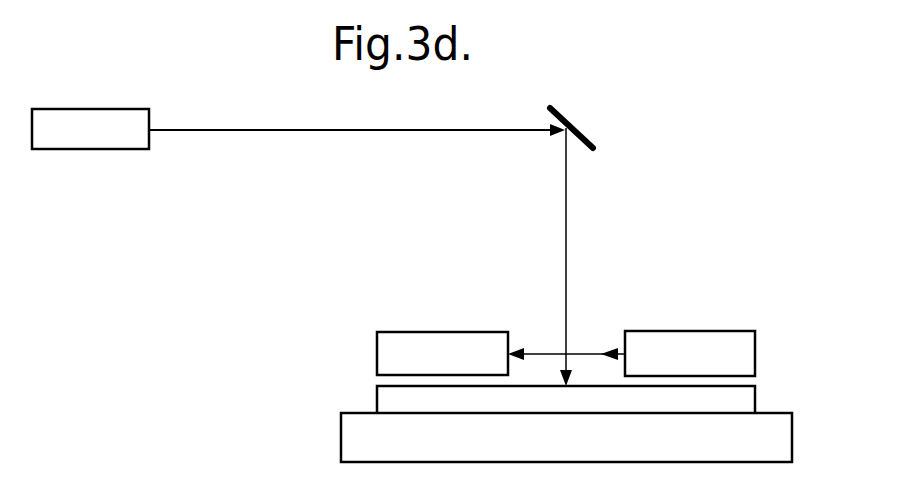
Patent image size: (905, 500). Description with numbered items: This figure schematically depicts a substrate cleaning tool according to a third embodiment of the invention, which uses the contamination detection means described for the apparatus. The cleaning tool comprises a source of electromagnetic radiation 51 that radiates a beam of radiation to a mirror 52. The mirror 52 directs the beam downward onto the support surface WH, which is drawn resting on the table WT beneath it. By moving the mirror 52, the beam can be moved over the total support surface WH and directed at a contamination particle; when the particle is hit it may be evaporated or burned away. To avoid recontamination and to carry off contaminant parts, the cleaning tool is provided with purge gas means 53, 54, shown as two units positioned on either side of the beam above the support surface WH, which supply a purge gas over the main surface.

The source of electromagnetic radiation 51 is at (90, 114).
The mirror 52 is at (612, 104).
The purge gas means 53 is at (710, 338).
The purge gas means 54 is at (400, 338).
The support surface WH is at (755, 392).
The wafer table WT is at (348, 437).